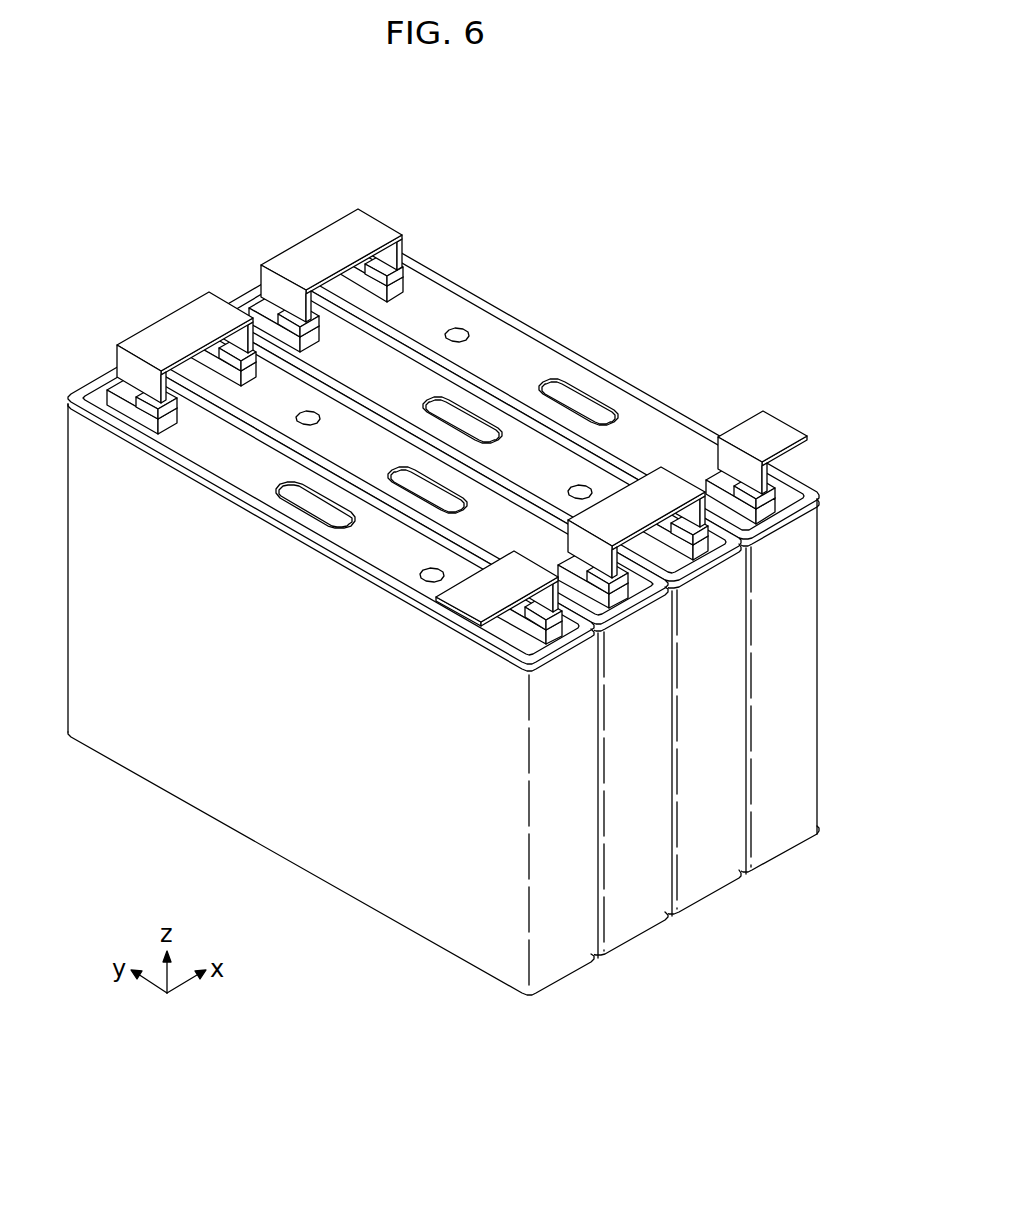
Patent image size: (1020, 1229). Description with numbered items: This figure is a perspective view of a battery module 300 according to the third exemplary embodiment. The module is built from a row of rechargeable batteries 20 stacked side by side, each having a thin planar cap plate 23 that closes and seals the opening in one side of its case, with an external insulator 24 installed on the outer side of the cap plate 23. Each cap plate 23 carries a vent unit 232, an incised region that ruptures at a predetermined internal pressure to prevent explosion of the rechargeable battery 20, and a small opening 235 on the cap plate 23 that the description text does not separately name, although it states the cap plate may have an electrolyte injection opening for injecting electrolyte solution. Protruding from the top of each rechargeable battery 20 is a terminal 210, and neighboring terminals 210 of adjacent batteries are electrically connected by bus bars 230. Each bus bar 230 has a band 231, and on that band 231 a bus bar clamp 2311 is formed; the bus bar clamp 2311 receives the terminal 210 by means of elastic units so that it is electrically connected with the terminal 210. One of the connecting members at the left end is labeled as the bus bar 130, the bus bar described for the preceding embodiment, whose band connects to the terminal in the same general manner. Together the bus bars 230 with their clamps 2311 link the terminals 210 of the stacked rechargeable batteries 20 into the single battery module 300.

The rechargeable battery 20 is at (435, 639).
The cap plate 23 is at (372, 549).
The external insulator 24 is at (113, 400).
The bus bar 130 is at (197, 307).
The terminal 210 is at (108, 378).
The bus bar 230 is at (363, 237).
The band 231 is at (262, 270).
The vent unit 232 is at (303, 513).
The electrolyte injection opening 235 is at (432, 577).
The battery module 300 is at (435, 614).
The bus bar clamp 2311 is at (177, 373).